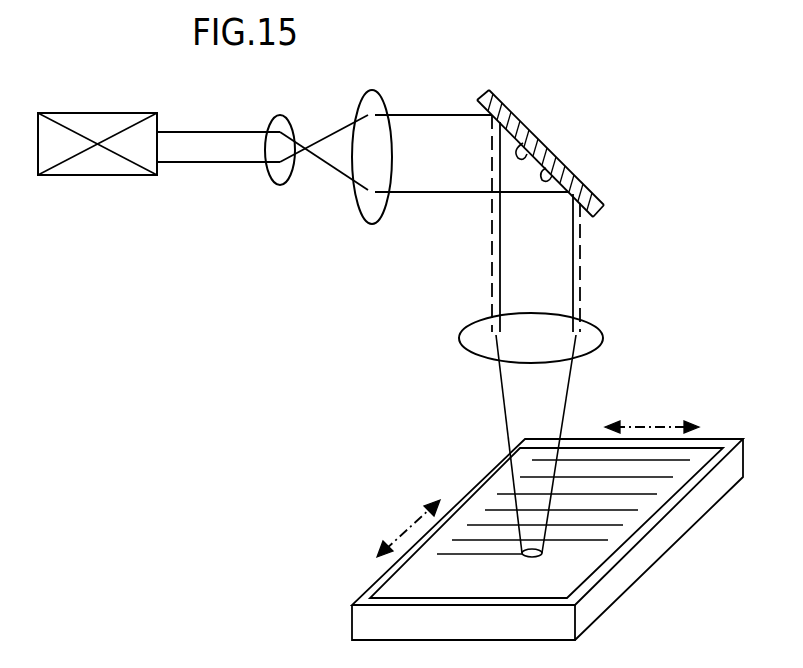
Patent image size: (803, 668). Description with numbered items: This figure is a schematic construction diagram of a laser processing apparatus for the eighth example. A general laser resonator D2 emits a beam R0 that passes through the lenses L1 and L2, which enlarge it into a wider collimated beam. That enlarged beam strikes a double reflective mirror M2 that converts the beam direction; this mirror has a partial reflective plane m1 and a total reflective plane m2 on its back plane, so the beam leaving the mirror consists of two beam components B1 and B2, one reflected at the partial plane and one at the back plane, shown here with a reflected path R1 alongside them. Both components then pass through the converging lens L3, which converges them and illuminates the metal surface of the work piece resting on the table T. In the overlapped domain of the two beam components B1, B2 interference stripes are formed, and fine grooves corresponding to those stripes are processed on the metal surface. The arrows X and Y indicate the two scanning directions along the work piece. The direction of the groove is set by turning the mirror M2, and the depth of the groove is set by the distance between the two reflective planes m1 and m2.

The laser resonator D2 is at (107, 88).
The light beam R0 is at (226, 146).
The lens L1 is at (265, 125).
The lens L2 is at (382, 97).
The double reflective mirror M2 is at (570, 162).
The total reflective plane m2 is at (523, 143).
The partial reflective plane m1 is at (546, 168).
The reflected beam R1 is at (520, 232).
The beam component B2 is at (574, 258).
The beam component B1 is at (582, 306).
The converging lens L3 is at (597, 349).
The X scanning direction X is at (640, 422).
The Y scanning direction Y is at (400, 532).
The table T is at (605, 597).